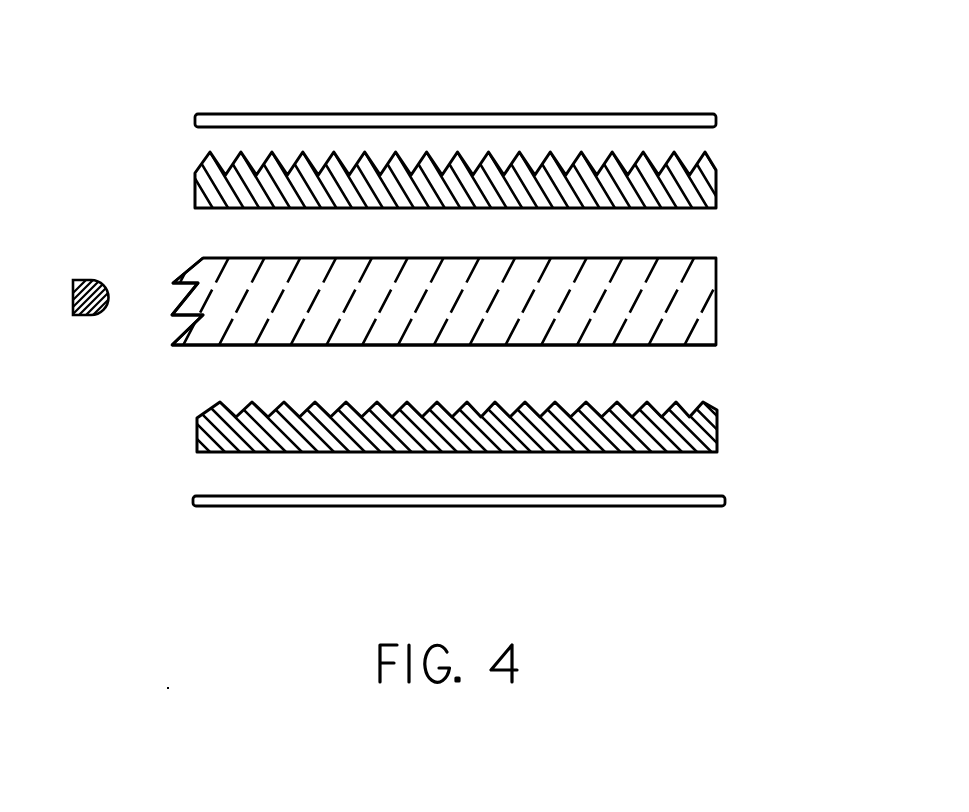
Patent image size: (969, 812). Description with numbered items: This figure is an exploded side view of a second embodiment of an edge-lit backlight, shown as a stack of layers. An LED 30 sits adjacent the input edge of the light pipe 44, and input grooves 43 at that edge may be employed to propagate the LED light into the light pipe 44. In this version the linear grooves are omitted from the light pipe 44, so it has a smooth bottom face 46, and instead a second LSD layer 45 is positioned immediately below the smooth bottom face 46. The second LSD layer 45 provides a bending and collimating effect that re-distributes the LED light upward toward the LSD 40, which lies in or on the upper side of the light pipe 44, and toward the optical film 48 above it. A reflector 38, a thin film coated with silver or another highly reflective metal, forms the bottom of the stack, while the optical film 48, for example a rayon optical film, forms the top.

The LED 30 is at (82, 280).
The reflector 38 is at (652, 506).
The LSD 40 is at (718, 192).
The input grooves 43 is at (183, 272).
The light pipe 44 is at (719, 290).
The second LSD layer 45 is at (197, 438).
The smooth bottom face 46 is at (655, 343).
The optical film 48 is at (568, 113).